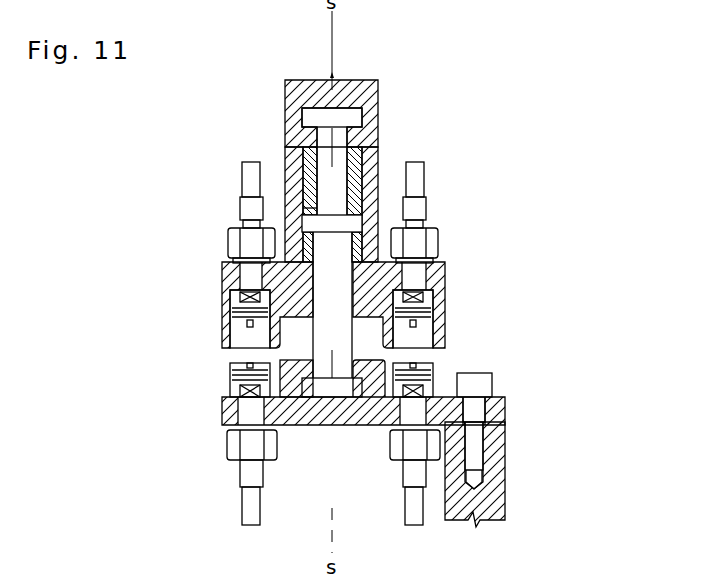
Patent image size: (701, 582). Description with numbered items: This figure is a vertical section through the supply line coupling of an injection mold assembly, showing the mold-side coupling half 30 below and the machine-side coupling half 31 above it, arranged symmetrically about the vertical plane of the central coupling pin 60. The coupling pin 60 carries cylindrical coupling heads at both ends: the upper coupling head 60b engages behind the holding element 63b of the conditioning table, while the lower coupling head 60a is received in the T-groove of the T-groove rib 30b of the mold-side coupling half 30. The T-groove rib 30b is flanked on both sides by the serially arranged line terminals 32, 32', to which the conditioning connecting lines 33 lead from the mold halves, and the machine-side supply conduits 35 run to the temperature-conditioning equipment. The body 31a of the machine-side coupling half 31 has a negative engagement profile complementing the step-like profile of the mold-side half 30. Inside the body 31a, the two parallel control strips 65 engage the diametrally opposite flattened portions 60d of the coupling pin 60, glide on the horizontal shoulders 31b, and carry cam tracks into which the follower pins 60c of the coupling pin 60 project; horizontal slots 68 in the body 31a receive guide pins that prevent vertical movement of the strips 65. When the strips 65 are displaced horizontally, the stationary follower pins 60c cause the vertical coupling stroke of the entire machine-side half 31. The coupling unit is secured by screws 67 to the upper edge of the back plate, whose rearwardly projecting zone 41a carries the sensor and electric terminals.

The mold-side coupling half 30 is at (352, 433).
The T-groove rib 30b is at (237, 425).
The machine-side coupling half 31 is at (455, 284).
The body of the machine-side coupling half 31a is at (287, 285).
The horizontal shoulders 31b is at (430, 257).
The line terminal 32 is at (329, 383).
The line terminal 32' is at (294, 319).
The conditioning connecting lines 33 is at (413, 502).
The machine-side supply conduits 35 is at (248, 180).
The rearwardly projecting zone of the back plate 41a is at (482, 503).
The coupling pins 60 is at (300, 346).
The lower coupling head 60a is at (325, 398).
The upper coupling head 60b is at (320, 117).
The follower pins 60c is at (362, 226).
The flattened portions 60d is at (303, 208).
The holding element 63b is at (355, 72).
The control strips 65 is at (348, 182).
The screws 67 is at (478, 383).
The horizontal slots 68 is at (360, 148).